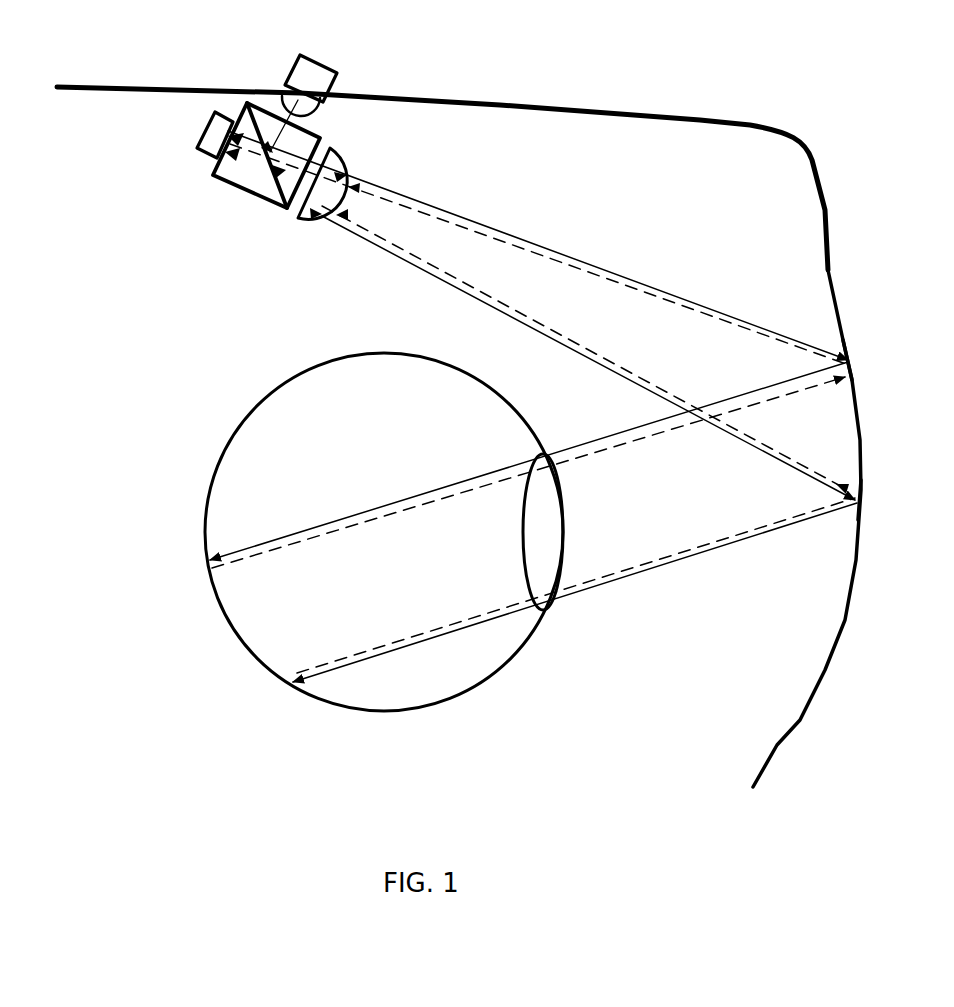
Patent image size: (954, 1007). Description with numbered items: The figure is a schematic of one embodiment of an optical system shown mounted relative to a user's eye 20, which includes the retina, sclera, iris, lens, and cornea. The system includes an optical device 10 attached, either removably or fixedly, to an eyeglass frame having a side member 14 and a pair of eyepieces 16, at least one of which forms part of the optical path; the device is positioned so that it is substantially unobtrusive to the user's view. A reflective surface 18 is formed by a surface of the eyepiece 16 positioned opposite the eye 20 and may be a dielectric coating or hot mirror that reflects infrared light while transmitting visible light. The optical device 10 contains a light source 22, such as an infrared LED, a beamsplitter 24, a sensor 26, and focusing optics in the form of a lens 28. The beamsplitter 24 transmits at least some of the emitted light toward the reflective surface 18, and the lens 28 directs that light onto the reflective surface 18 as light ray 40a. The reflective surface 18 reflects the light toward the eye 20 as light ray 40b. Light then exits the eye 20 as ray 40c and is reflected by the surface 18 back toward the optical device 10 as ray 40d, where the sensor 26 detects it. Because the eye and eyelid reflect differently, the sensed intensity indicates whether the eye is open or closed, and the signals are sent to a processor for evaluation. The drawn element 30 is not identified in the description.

The optical device 10 is at (272, 52).
The side member 14 is at (148, 88).
The eyepiece 16 is at (850, 345).
The reflective surface 18 is at (840, 468).
The eye 20 is at (256, 405).
The light source 22 is at (320, 65).
The beamsplitter 24 is at (272, 180).
The sensor 26 is at (197, 128).
The lens 28 is at (333, 165).
The cornea / pupil region 30 is at (562, 510).
The light ray 40a is at (583, 250).
The light ray 40b is at (612, 428).
The light ray 40c is at (690, 425).
The light ray 40d is at (652, 290).